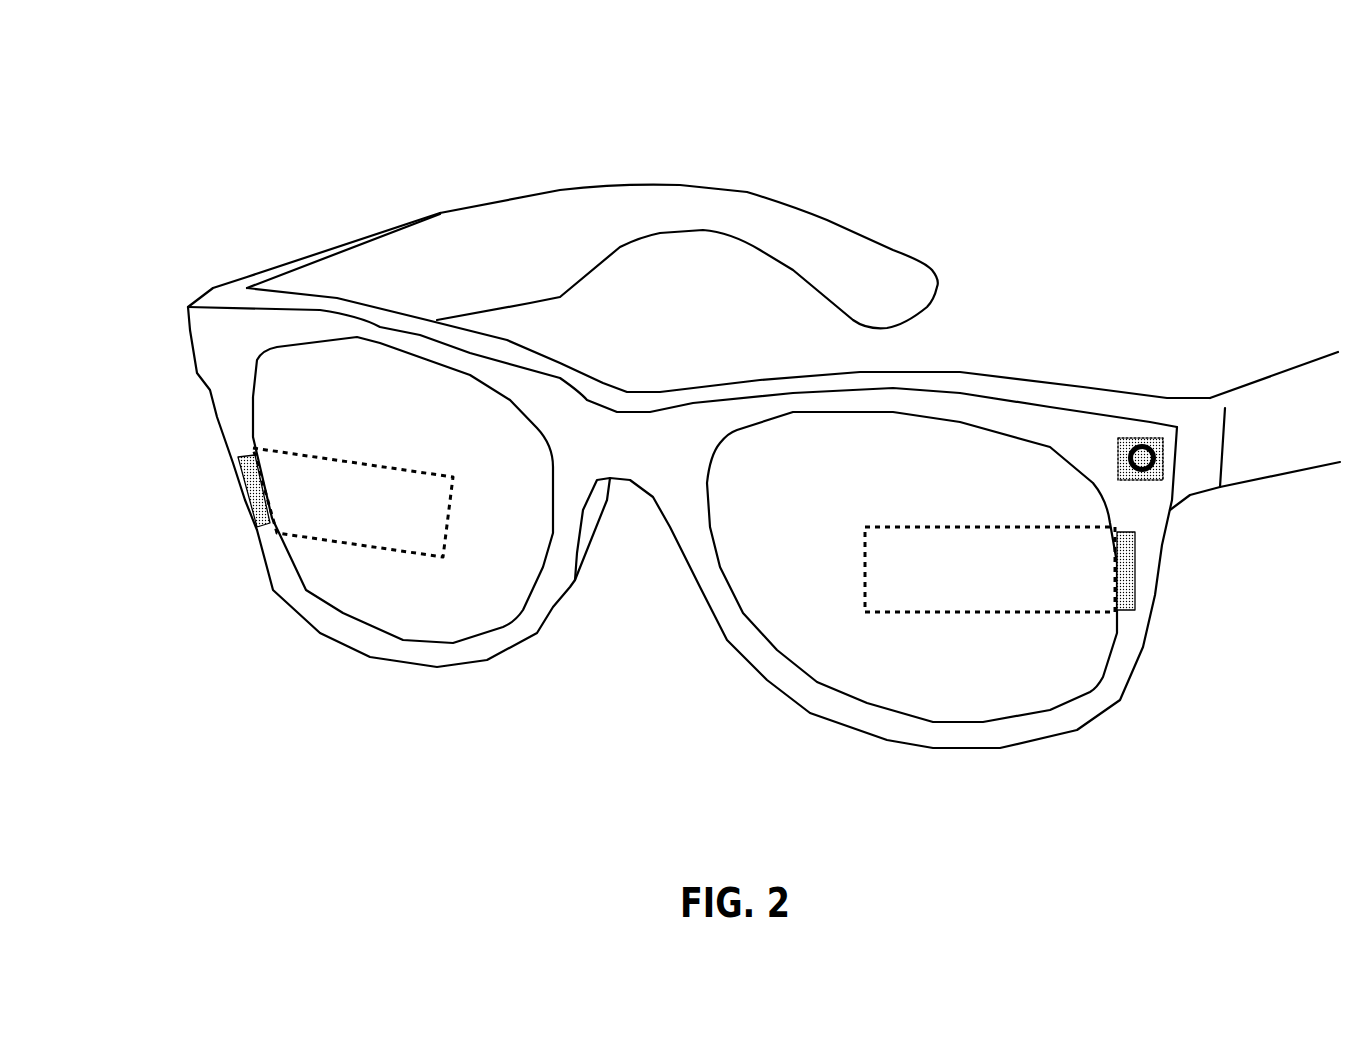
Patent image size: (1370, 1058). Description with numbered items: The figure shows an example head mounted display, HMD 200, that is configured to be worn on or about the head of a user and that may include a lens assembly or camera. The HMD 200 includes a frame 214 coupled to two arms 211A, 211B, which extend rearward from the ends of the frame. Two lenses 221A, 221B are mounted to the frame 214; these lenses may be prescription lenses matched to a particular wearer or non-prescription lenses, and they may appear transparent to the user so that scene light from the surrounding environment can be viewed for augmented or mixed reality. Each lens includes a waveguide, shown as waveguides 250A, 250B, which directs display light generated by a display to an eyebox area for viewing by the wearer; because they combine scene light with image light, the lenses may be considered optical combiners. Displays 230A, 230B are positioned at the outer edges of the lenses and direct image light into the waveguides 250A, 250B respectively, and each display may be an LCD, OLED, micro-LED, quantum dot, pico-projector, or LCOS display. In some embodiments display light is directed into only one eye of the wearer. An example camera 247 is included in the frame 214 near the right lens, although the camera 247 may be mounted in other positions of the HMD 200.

The HMD 200 is at (1295, 53).
The arm 211A is at (540, 271).
The arm 211B is at (1295, 441).
The frame 214 is at (238, 350).
The lens 221A is at (520, 535).
The lens 221B is at (942, 449).
The display 230A is at (253, 498).
The display 230B is at (1135, 573).
The camera 247 is at (1147, 440).
The waveguide 250A is at (283, 452).
The waveguide 250B is at (1112, 612).